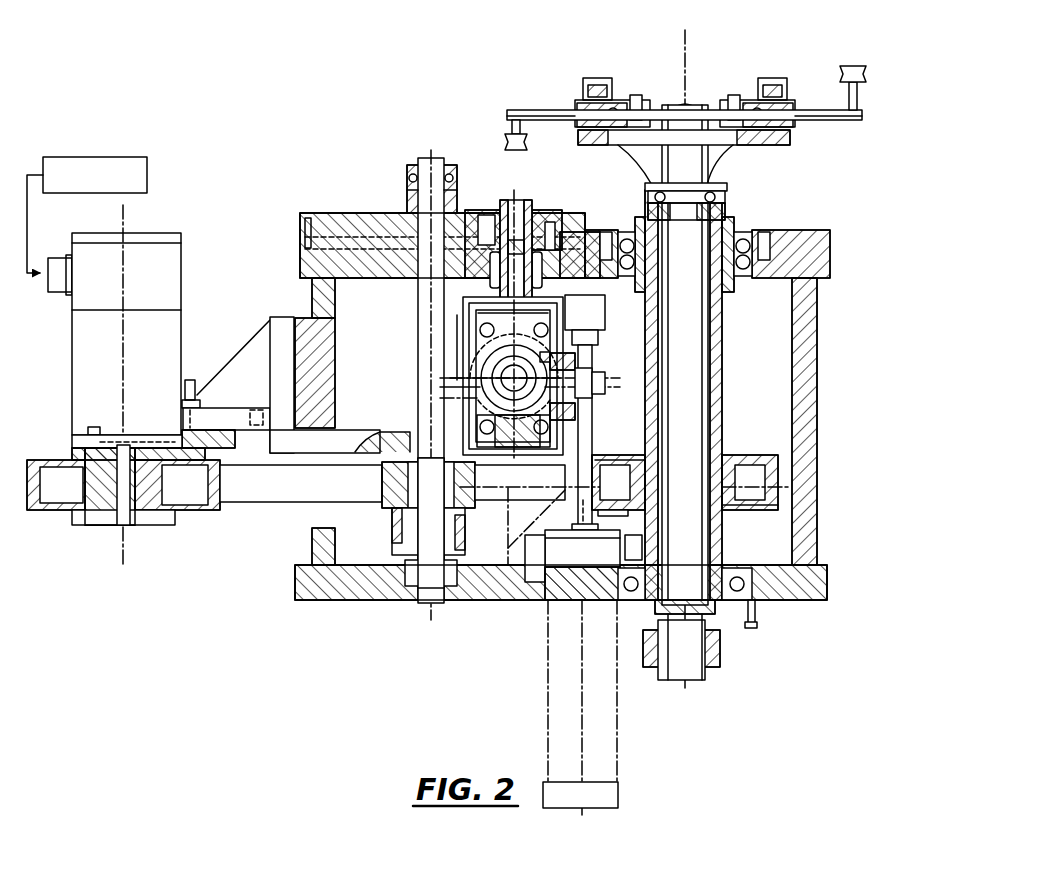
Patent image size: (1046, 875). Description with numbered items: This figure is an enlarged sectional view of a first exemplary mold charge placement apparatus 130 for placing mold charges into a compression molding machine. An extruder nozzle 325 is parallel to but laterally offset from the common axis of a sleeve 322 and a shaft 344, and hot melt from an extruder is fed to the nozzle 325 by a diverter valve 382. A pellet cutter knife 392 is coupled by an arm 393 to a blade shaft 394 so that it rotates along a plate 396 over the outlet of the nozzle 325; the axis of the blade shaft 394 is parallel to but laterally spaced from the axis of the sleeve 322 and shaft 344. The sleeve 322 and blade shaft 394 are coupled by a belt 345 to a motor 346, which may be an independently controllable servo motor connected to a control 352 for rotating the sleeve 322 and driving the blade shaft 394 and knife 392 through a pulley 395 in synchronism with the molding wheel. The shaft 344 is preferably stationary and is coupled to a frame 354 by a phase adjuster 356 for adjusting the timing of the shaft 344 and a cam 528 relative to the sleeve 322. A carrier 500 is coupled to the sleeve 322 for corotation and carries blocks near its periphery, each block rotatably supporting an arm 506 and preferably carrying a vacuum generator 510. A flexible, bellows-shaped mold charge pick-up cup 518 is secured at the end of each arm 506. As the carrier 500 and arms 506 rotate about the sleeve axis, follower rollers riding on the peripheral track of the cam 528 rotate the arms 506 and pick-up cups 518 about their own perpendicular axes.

The mold charge placement apparatus 130 is at (365, 102).
The control 352 is at (87, 157).
The motor 346 is at (94, 352).
The belt 345 is at (247, 494).
The plate 396 is at (347, 214).
The blade shaft 394 is at (425, 324).
The pulley 395 is at (390, 500).
The arm 393 is at (467, 215).
The pellet cutter knife 392 is at (524, 208).
The extruder nozzle 325 is at (518, 239).
The diverter valve 382 is at (458, 392).
The cam 528 is at (700, 105).
The sleeve 322 is at (715, 330).
The shaft 344 is at (700, 391).
The frame 354 is at (812, 587).
The phase adjuster 356 is at (737, 647).
The carrier 500 is at (720, 146).
The vacuum generator 510 is at (598, 78).
The arm 506 is at (535, 108).
The mold charge pick-up cup 518 is at (507, 140).